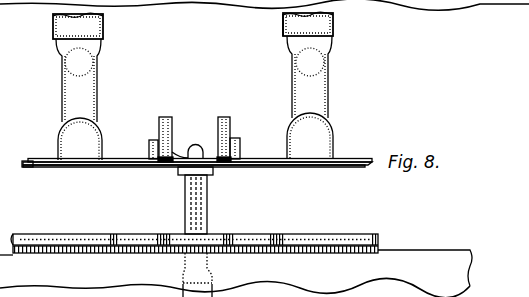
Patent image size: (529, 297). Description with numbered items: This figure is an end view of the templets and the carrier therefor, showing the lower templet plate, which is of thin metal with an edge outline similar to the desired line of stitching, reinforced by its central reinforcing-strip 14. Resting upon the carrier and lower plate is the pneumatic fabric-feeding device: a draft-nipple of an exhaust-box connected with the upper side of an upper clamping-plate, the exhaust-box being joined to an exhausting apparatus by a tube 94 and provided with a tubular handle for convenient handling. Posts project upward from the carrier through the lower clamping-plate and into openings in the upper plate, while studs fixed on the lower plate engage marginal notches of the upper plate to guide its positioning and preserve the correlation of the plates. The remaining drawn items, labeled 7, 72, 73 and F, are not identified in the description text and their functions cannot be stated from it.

The base 7 is at (472, 260).
The central reinforcing-strip 14 is at (214, 171).
The lower plate 72 is at (123, 167).
The bar 73 is at (115, 159).
The tube 94 is at (283, 20).
The direction arrow F is at (26, 157).